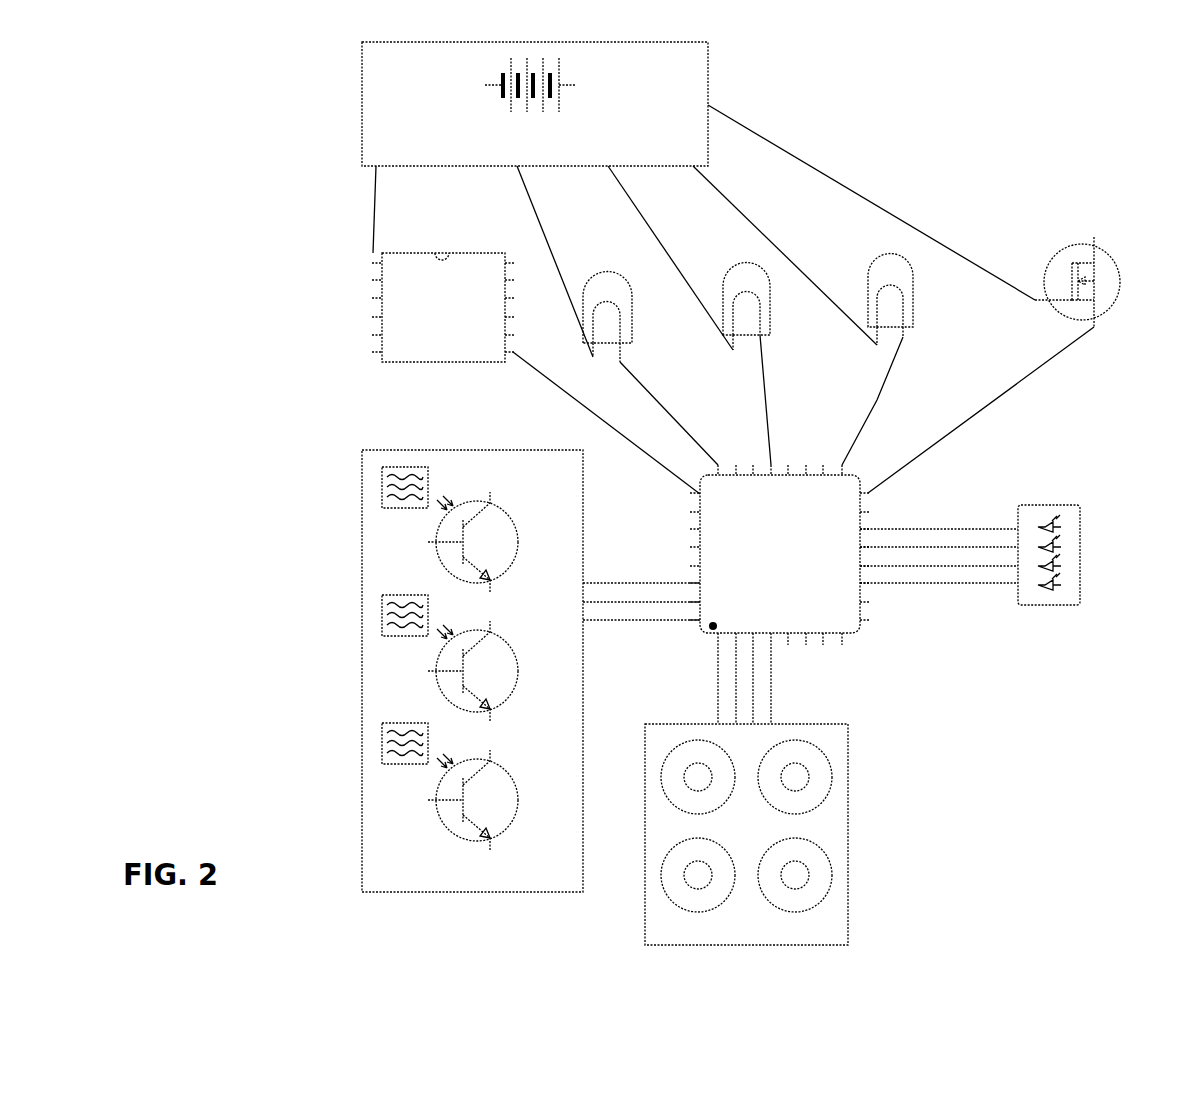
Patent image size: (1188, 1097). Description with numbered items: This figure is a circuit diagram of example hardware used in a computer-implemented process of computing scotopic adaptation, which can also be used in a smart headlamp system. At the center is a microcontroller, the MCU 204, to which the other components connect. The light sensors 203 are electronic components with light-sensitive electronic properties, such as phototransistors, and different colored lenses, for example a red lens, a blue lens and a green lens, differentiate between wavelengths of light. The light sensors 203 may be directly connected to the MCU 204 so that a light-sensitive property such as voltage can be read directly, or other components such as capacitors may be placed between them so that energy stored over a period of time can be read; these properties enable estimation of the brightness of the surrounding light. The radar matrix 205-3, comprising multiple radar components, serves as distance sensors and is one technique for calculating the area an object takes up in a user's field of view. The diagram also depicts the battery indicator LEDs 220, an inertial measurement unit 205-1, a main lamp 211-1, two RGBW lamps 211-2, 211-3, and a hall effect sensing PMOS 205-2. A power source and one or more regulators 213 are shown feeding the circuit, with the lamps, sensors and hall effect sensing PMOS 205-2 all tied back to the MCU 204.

The power source and regulators 213 is at (362, 80).
The inertial measurement unit (IMU) 205-1 is at (437, 253).
The main lamp 211-1 is at (600, 272).
The RGBW lamp 211-2 is at (730, 270).
The RGBW lamp 211-3 is at (873, 265).
The hall effect sensing PMOS 205-2 is at (1048, 262).
The MCU 204 is at (700, 548).
The light sensors 203 is at (362, 473).
The battery indicator LEDs 220 is at (1035, 505).
The radar matrix 205-3 is at (672, 724).